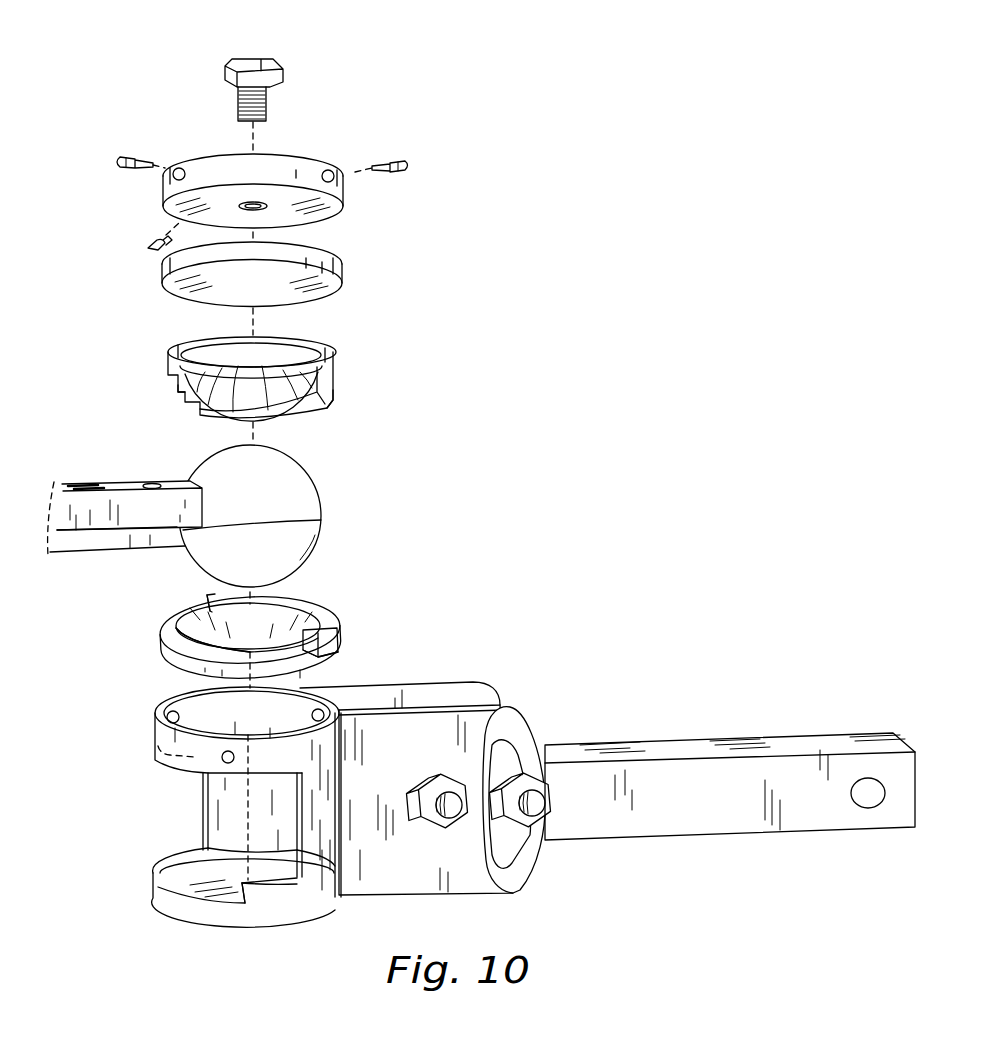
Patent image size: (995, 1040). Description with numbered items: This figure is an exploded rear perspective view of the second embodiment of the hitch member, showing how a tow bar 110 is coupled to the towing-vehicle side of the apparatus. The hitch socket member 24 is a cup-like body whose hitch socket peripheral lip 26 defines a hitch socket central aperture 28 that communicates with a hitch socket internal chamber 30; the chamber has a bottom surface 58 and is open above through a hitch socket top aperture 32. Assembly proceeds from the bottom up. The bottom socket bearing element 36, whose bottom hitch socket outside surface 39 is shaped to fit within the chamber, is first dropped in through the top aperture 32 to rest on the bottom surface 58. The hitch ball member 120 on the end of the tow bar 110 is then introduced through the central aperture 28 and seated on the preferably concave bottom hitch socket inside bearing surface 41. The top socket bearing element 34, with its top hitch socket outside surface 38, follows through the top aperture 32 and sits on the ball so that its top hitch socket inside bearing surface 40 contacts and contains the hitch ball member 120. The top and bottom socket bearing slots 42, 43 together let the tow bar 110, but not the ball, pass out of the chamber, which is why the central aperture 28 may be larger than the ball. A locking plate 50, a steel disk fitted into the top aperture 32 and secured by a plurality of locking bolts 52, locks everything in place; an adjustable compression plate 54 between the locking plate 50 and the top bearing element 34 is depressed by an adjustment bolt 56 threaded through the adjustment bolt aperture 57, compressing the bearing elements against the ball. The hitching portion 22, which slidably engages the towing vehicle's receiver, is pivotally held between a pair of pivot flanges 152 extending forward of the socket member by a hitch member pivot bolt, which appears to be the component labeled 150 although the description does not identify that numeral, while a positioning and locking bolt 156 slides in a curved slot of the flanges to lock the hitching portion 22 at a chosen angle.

The hitching portion 22 is at (772, 767).
The hitch socket member 24 is at (308, 908).
The hitch socket peripheral lip 26 is at (157, 888).
The hitch socket central aperture 28 is at (145, 852).
The hitch socket internal chamber 30 is at (227, 800).
The hitch socket top aperture 32 is at (167, 697).
The top socket bearing element 34 is at (334, 372).
The bottom socket bearing element 36 is at (333, 640).
The top hitch socket outside surface 38 is at (318, 348).
The bottom hitch socket outside surface 39 is at (333, 662).
The top hitch socket inside bearing surface 40 is at (200, 402).
The bottom hitch socket inside bearing surface 41 is at (208, 612).
The top socket bearing slot 42 is at (318, 416).
The bottom socket bearing slot 43 is at (168, 638).
The locking plate 50 is at (343, 208).
The locking bolts 52 is at (405, 163).
The adjustable compression plate 54 is at (342, 268).
The adjustment bolt 56 is at (284, 72).
The adjustment bolt aperture 57 is at (265, 204).
The bottom surface 58 is at (232, 893).
The tow bar 110 is at (88, 503).
The hitch ball member 120 is at (318, 478).
The nuts 150 is at (457, 793).
The pivot flanges 152 is at (495, 700).
The positioning and locking bolt 156 is at (540, 777).